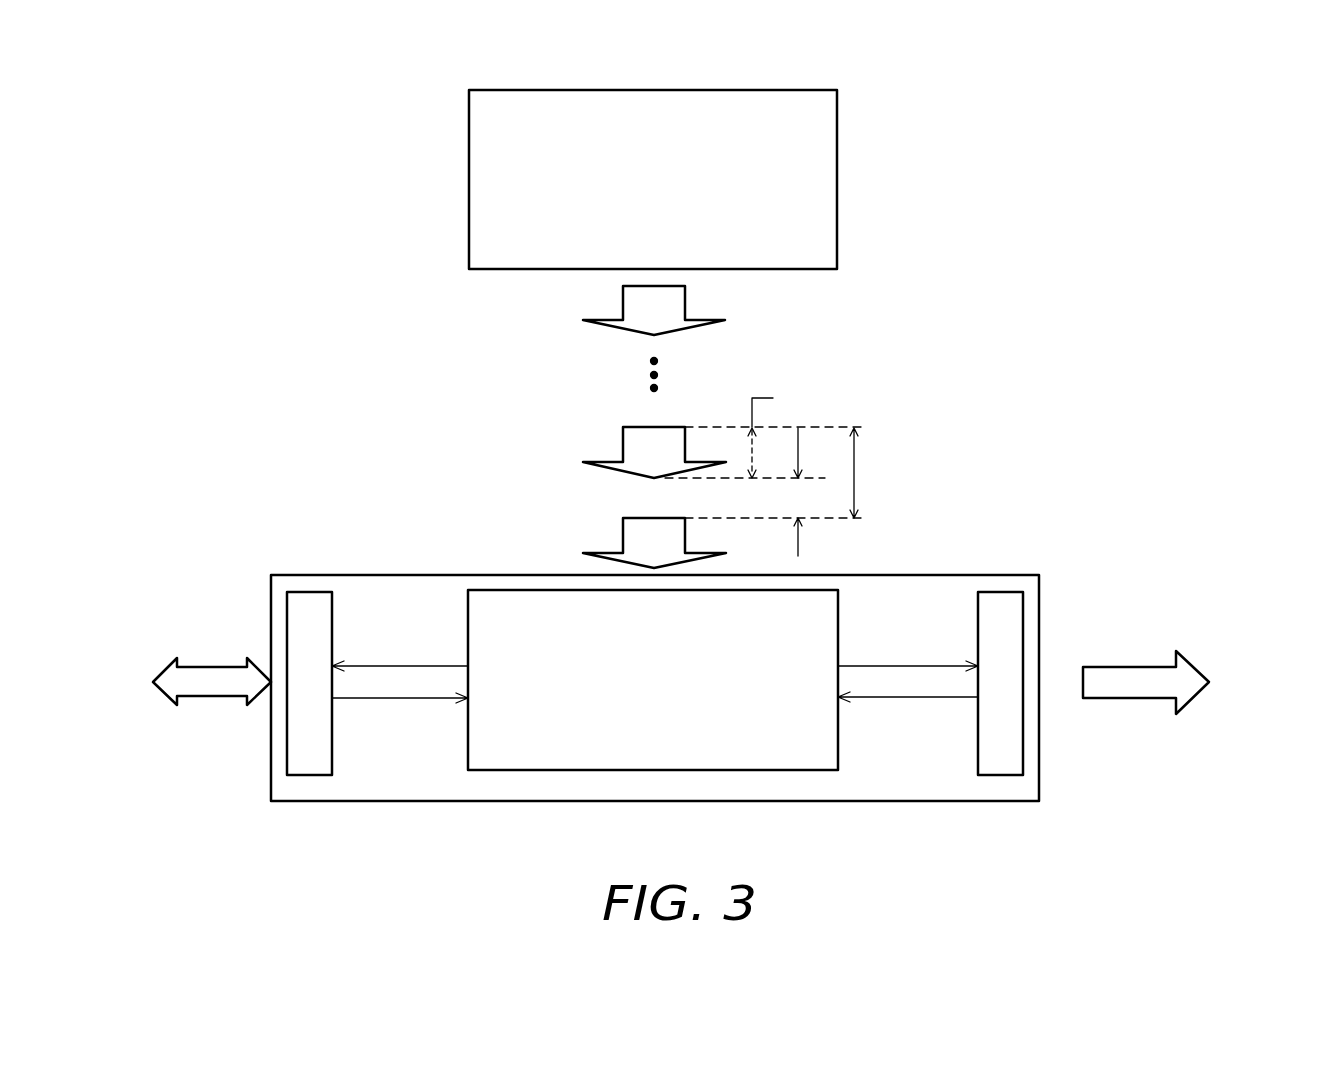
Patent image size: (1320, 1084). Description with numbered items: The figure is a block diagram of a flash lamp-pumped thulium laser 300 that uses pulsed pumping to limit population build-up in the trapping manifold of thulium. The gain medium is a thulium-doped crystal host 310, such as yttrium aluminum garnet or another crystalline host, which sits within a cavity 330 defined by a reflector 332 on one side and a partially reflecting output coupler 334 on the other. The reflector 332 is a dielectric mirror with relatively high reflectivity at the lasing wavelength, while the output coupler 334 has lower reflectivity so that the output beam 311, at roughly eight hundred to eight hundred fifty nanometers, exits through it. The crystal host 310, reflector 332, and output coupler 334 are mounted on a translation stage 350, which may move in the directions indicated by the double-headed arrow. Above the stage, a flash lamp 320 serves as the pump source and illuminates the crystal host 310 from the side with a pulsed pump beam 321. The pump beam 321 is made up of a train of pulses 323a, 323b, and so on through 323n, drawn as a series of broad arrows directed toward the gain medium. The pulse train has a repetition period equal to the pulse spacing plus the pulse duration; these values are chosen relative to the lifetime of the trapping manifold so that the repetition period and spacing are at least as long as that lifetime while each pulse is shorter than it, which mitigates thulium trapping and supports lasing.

The thulium laser 300 is at (323, 157).
The flash lamp 320 is at (838, 127).
The pump beam 321 is at (757, 425).
The pulse 323n is at (622, 310).
The pulse 323b is at (622, 445).
The pulse 323a is at (622, 533).
The translation stage 350 is at (885, 803).
The reflector 332 is at (287, 629).
The partially reflecting output coupler 334 is at (1013, 777).
The thulium-doped crystal host 310 is at (772, 772).
The cavity 330 is at (445, 817).
The output beam 311 is at (1192, 663).